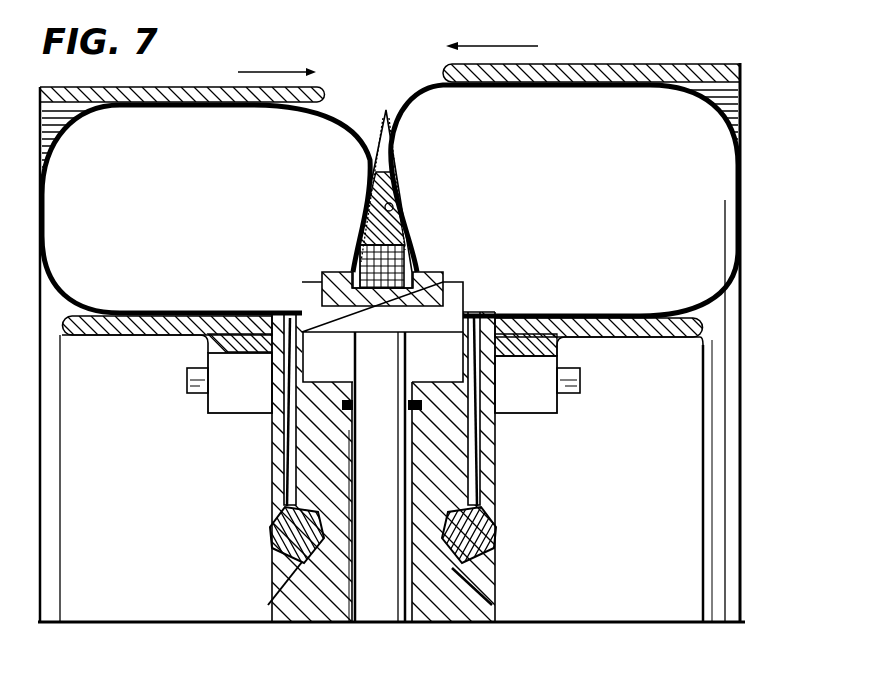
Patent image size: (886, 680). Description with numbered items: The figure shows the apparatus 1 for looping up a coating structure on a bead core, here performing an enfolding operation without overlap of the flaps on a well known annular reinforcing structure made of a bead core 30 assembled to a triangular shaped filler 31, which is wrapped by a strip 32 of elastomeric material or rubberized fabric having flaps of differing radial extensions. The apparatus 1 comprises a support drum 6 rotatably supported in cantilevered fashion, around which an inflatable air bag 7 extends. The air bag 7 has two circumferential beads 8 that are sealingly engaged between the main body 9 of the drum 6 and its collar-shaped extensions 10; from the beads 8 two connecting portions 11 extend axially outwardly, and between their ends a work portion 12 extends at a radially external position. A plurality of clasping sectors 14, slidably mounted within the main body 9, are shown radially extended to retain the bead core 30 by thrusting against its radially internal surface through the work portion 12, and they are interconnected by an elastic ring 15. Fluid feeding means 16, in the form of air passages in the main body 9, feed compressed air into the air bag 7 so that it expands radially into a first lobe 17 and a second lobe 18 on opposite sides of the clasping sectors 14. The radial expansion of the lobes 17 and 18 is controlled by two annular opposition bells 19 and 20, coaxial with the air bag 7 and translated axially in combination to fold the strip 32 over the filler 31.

The apparatus 1 is at (105, 639).
The support drum 6 is at (259, 600).
The inflatable air bag 7 is at (750, 249).
The circumferential beads 8 is at (254, 354).
The main body 9 is at (490, 494).
The collar-shaped extensions 10 is at (120, 334).
The connecting portions 11 is at (185, 313).
The work portion 12 is at (370, 193).
The clasping sectors 14 is at (455, 284).
The elastic ring 15 is at (430, 273).
The fluid feeding means 16 is at (283, 437).
The first lobe 17 is at (247, 112).
The second lobe 18 is at (530, 88).
The first annular opposition bell 19 is at (196, 96).
The second annular opposition bell 20 is at (683, 73).
The bead core 30 is at (362, 258).
The triangular shaped filler 31 is at (370, 222).
The strip 32 is at (393, 204).